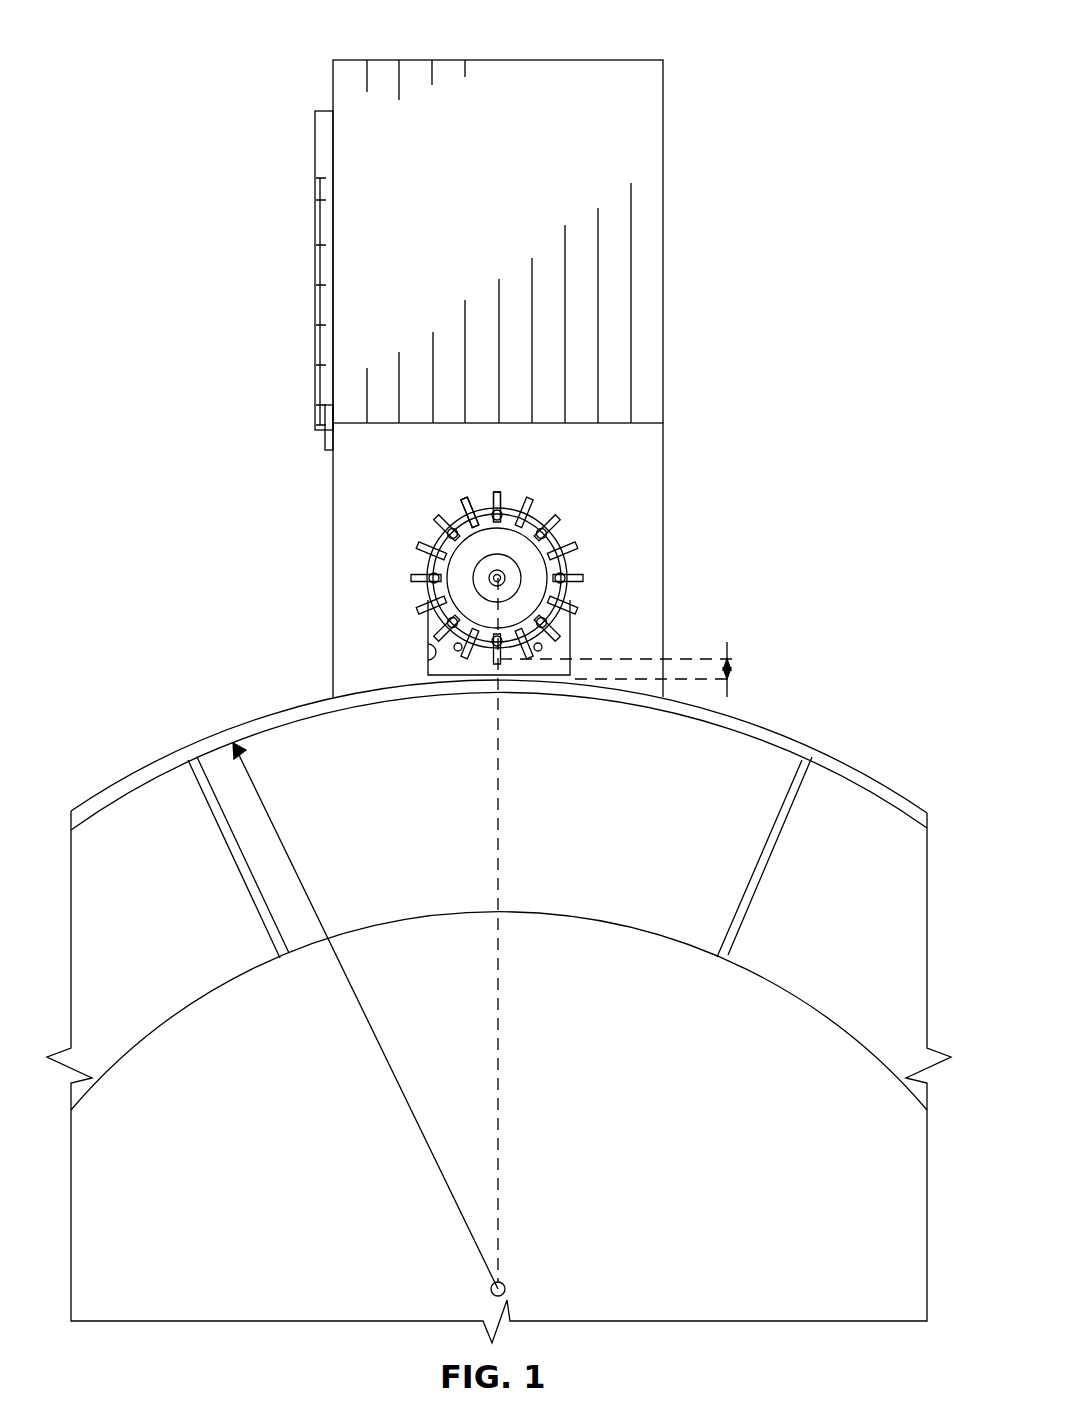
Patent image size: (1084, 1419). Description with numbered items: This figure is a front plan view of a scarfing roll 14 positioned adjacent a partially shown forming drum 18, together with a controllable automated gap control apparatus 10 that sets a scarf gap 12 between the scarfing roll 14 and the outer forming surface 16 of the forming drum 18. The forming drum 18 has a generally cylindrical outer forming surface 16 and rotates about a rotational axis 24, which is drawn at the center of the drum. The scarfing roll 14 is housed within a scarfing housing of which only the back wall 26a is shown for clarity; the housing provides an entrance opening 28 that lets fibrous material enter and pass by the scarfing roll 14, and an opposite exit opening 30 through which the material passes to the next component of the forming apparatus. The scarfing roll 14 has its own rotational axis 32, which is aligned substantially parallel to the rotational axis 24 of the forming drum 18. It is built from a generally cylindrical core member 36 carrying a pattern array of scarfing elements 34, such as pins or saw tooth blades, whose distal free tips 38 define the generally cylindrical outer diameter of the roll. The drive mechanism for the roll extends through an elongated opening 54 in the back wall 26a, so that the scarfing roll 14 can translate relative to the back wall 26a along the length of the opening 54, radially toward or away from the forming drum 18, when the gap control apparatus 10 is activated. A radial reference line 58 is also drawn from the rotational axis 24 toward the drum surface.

The controllable automated gap control apparatus 10 is at (296, 39).
The scarf gap 12 is at (735, 672).
The scarfing roll 14 is at (490, 548).
The outer forming surface 16 is at (885, 787).
The forming drum 18 is at (777, 747).
The rotational axis 24 is at (491, 1287).
The back wall 26a is at (663, 90).
The entrance opening 28 is at (326, 603).
The exit opening 30 is at (673, 623).
The rotational axis 32 is at (500, 580).
The scarfing elements 34 is at (500, 500).
The core member 36 is at (538, 527).
The distal free tips 38 is at (467, 505).
The elongated opening 54 is at (428, 644).
The radial line 58 is at (497, 882).